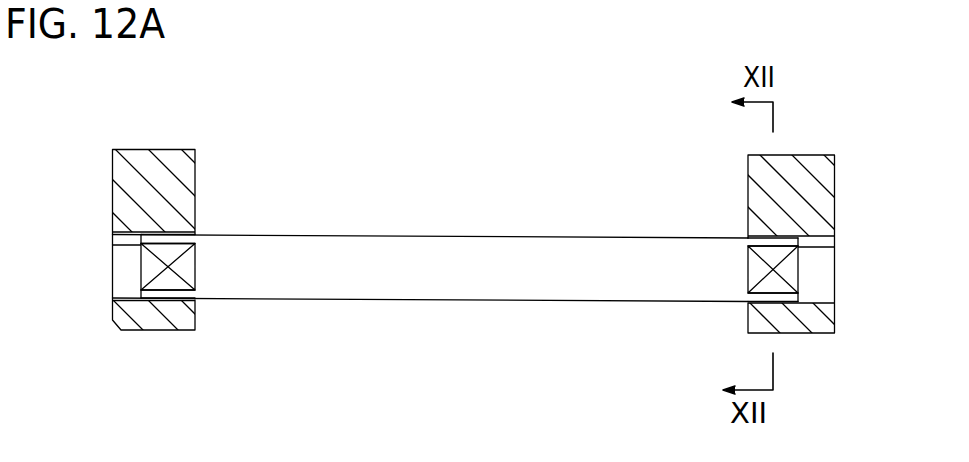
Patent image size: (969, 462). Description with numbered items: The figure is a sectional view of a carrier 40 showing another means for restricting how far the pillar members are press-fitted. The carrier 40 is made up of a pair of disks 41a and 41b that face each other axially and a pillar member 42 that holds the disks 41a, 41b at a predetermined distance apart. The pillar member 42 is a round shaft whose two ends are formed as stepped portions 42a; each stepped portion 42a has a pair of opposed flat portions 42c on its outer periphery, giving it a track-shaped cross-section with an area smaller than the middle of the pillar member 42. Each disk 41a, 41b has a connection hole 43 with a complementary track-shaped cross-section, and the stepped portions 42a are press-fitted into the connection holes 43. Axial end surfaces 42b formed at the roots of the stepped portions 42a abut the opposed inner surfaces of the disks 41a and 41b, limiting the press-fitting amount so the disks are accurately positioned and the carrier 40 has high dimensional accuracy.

The carrier 40 is at (108, 151).
The disk 41a is at (825, 176).
The disk 41b is at (122, 203).
The pillar member 42 is at (443, 250).
The stepped portion 42a is at (158, 299).
The axial end surface 42b is at (196, 252).
The flat portion 42c is at (170, 283).
The connection hole 43 is at (126, 237).